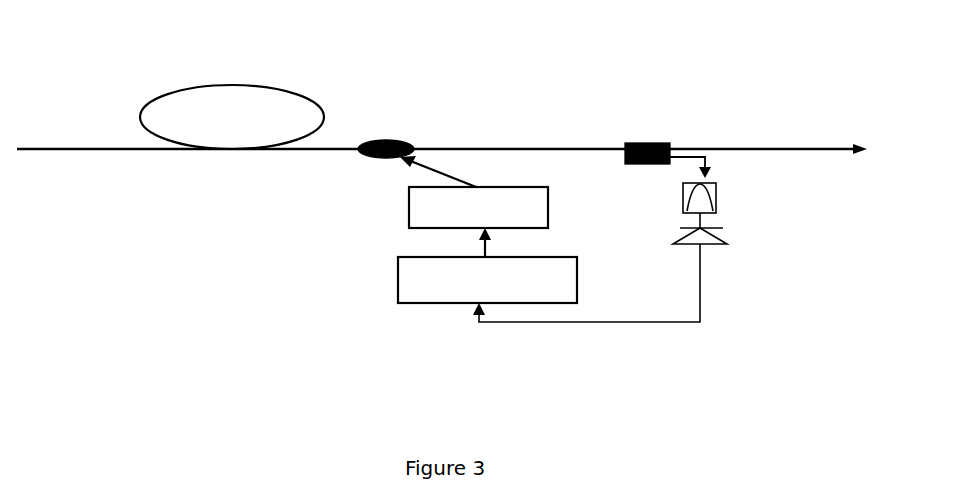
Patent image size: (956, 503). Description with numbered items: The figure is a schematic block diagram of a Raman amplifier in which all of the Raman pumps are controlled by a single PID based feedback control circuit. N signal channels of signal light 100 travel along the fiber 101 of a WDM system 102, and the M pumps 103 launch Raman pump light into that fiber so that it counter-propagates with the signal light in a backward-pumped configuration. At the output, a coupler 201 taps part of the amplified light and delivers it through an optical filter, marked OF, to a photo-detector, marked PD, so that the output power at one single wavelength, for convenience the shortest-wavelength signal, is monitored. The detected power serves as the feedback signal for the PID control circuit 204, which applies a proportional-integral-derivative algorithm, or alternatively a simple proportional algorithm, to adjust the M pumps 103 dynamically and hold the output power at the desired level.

The signal light 100 is at (42, 148).
The fiber 101 is at (243, 86).
The WDM system 102 is at (427, 110).
The M pumps 103 is at (545, 188).
The coupler 201 is at (722, 127).
The PID control circuit 204 is at (397, 283).